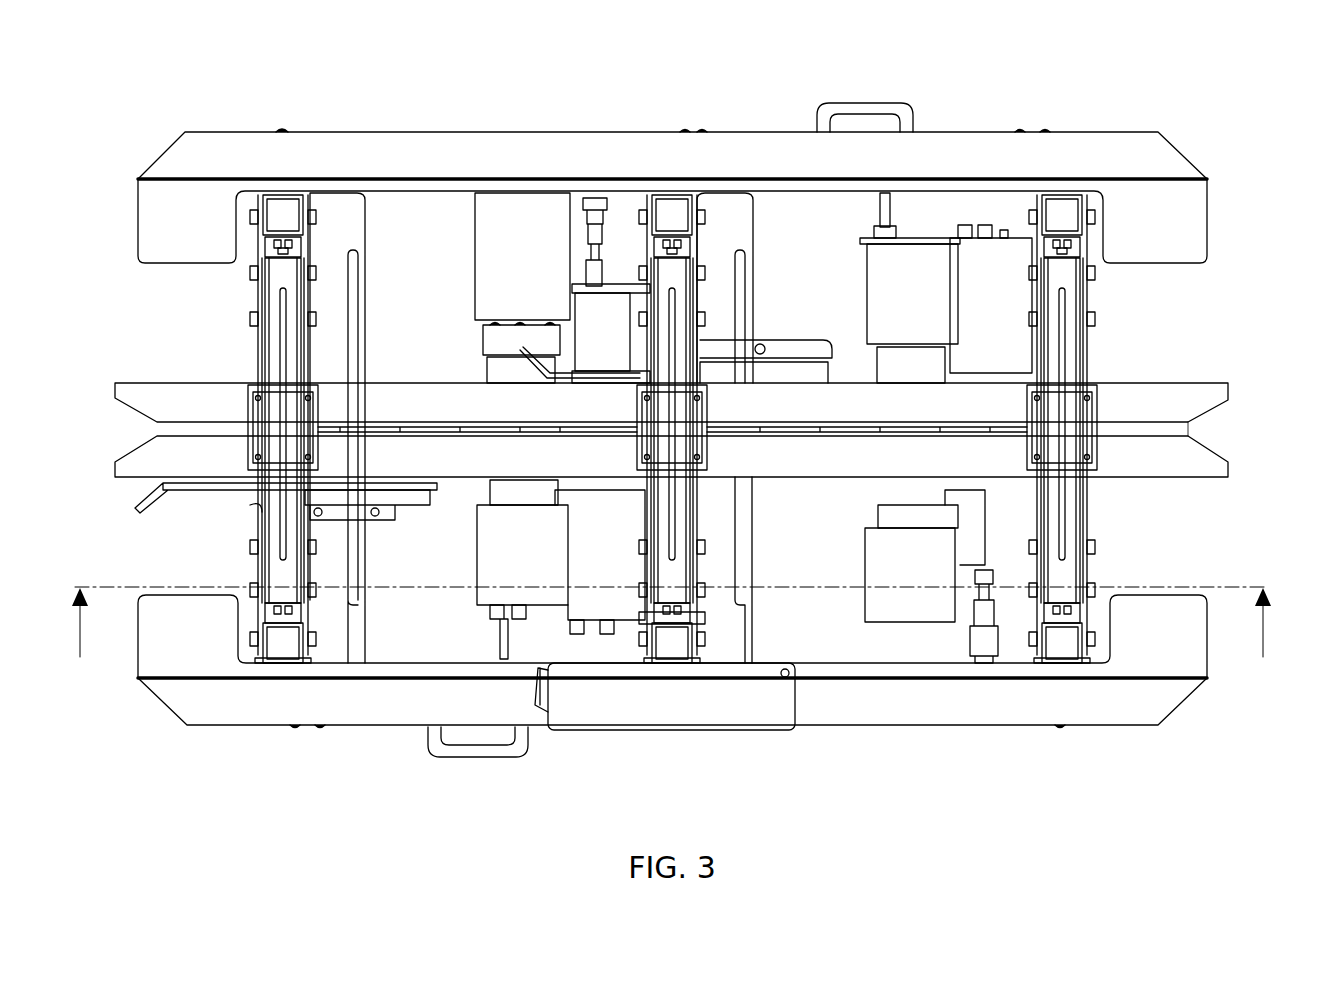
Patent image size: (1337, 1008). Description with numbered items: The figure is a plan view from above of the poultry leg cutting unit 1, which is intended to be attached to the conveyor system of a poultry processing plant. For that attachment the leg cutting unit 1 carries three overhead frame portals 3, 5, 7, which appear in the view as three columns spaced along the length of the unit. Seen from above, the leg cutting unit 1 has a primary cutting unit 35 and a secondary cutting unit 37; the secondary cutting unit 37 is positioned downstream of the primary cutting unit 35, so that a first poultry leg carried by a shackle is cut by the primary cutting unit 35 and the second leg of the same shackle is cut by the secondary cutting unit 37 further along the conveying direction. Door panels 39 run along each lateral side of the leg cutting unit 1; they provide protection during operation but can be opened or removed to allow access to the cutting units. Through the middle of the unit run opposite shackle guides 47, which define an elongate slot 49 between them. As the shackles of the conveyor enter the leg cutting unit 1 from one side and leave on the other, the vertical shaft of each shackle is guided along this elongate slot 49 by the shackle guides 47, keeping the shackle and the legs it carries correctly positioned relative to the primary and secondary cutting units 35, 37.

The poultry leg cutting unit 1 is at (679, 422).
The overhead frame portal 3 is at (270, 528).
The overhead frame portal 5 is at (681, 575).
The overhead frame portal 7 is at (1070, 577).
The primary cutting unit 35 is at (518, 237).
The secondary cutting unit 37 is at (920, 283).
The door panel 39 is at (1122, 157).
The shackle guide 47 is at (1200, 397).
The elongate slot 49 is at (1198, 430).